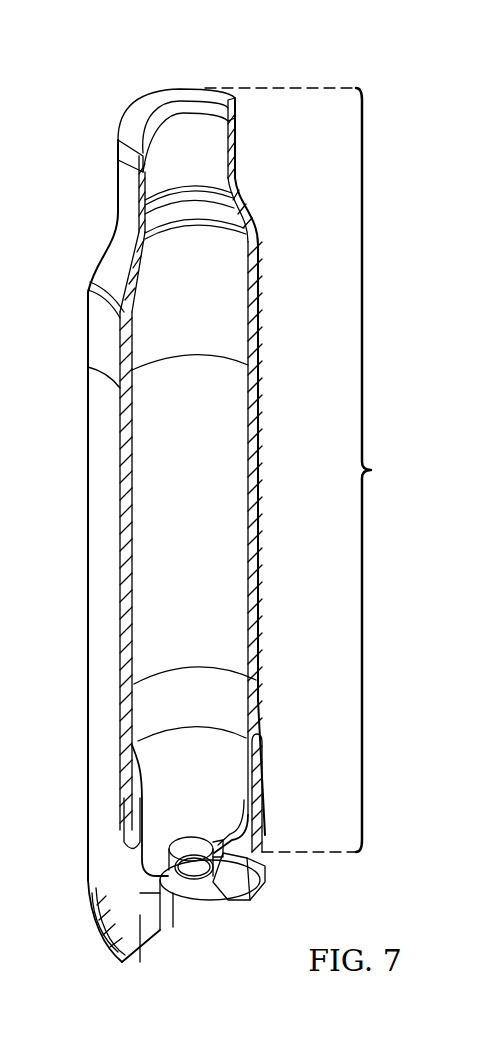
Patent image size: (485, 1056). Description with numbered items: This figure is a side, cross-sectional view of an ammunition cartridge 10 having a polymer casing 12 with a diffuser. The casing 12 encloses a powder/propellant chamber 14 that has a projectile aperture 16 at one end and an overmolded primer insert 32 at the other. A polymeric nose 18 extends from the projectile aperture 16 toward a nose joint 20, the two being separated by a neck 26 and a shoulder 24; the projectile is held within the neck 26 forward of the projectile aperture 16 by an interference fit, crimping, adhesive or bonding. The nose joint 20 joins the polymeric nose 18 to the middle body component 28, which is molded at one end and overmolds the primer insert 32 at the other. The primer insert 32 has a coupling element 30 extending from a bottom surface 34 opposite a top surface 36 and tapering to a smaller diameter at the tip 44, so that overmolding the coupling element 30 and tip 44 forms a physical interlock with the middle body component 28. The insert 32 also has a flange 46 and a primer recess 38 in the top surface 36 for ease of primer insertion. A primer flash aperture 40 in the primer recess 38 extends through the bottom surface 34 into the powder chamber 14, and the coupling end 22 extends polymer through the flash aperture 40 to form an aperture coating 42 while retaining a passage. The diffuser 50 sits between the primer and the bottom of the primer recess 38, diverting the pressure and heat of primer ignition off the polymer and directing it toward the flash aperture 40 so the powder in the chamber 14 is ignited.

The ammunition cartridge 10 is at (113, 72).
The polymer casing 12 is at (305, 470).
The powder/propellant chamber 14 is at (177, 531).
The projectile aperture 16 is at (203, 100).
The polymeric nose 18 is at (90, 312).
The nose joint 20 is at (96, 362).
The coupling end 22 is at (268, 762).
The shoulder 24 is at (110, 236).
The neck 26 is at (118, 176).
The middle body component 28 is at (90, 611).
The coupling element 30 is at (258, 812).
The primer insert 32 is at (110, 954).
The bottom surface 34 is at (216, 895).
The top surface 36 is at (140, 965).
The primer recess 38 is at (160, 927).
The primer flash aperture 40 is at (197, 837).
The aperture coating 42 is at (176, 848).
The tip 44 is at (268, 712).
The flange 46 is at (88, 925).
The diffuser 50 is at (250, 878).